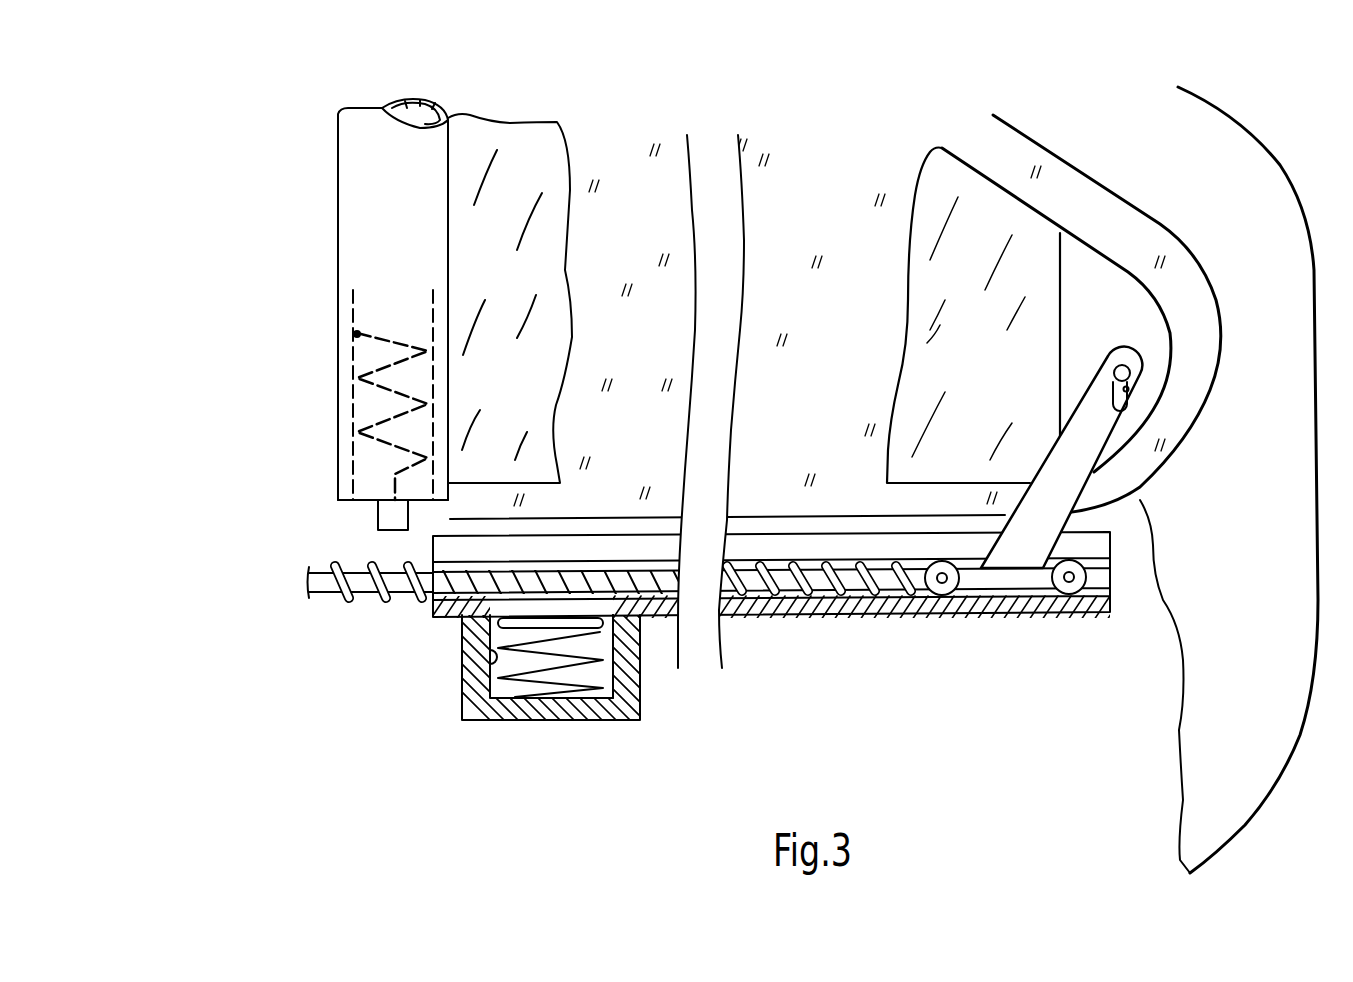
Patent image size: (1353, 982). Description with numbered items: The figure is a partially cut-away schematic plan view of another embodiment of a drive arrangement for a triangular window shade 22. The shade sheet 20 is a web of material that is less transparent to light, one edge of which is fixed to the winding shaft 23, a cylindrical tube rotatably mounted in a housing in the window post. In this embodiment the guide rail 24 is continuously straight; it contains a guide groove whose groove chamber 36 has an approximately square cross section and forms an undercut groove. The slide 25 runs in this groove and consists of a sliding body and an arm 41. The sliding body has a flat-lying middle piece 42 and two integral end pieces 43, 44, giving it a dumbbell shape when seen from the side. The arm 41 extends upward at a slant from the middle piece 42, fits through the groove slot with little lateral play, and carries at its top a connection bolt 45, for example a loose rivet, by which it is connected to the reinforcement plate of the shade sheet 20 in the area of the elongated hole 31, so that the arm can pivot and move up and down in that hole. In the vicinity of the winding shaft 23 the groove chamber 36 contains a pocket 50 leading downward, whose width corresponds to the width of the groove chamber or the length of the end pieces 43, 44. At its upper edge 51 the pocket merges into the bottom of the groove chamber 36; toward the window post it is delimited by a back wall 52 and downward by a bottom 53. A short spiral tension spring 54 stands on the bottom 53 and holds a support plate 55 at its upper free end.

The shade sheet 20 is at (947, 168).
The window shade 22 is at (266, 527).
The winding shaft 23 is at (435, 103).
The guide rail 24 is at (1032, 685).
The slide 25 is at (1165, 507).
The elongated hole 31 is at (1135, 394).
The groove chamber 36 is at (1105, 590).
The arm 41 is at (1070, 465).
The middle piece 42 is at (990, 613).
The end piece 43 is at (918, 613).
The end piece 44 is at (1070, 613).
The connection bolt 45 is at (1128, 366).
The pocket 50 is at (502, 682).
The upper edge 51 is at (604, 617).
The back wall 52 is at (490, 661).
The bottom 53 is at (488, 700).
The spiral tension spring 54 is at (555, 667).
The support plate 55 is at (605, 627).